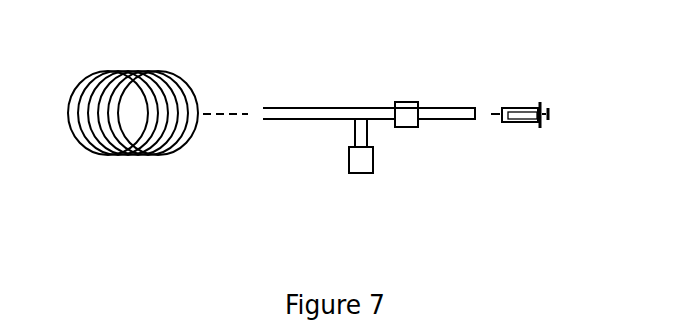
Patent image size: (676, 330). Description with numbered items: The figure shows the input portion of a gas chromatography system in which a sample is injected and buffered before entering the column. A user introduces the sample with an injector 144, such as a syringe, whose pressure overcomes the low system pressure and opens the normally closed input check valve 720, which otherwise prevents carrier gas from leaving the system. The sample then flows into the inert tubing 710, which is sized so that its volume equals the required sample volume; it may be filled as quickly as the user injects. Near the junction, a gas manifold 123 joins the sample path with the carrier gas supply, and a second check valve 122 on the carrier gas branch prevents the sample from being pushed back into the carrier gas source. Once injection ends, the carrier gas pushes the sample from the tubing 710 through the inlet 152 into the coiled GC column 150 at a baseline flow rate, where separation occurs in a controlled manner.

The GC column 150 is at (78, 83).
The inlet 152 is at (203, 105).
The inert tubing 710 is at (218, 105).
The input check valve 720 is at (407, 100).
The check valve 122 is at (336, 146).
The gas manifold 123 is at (374, 126).
The injector 144 is at (512, 103).